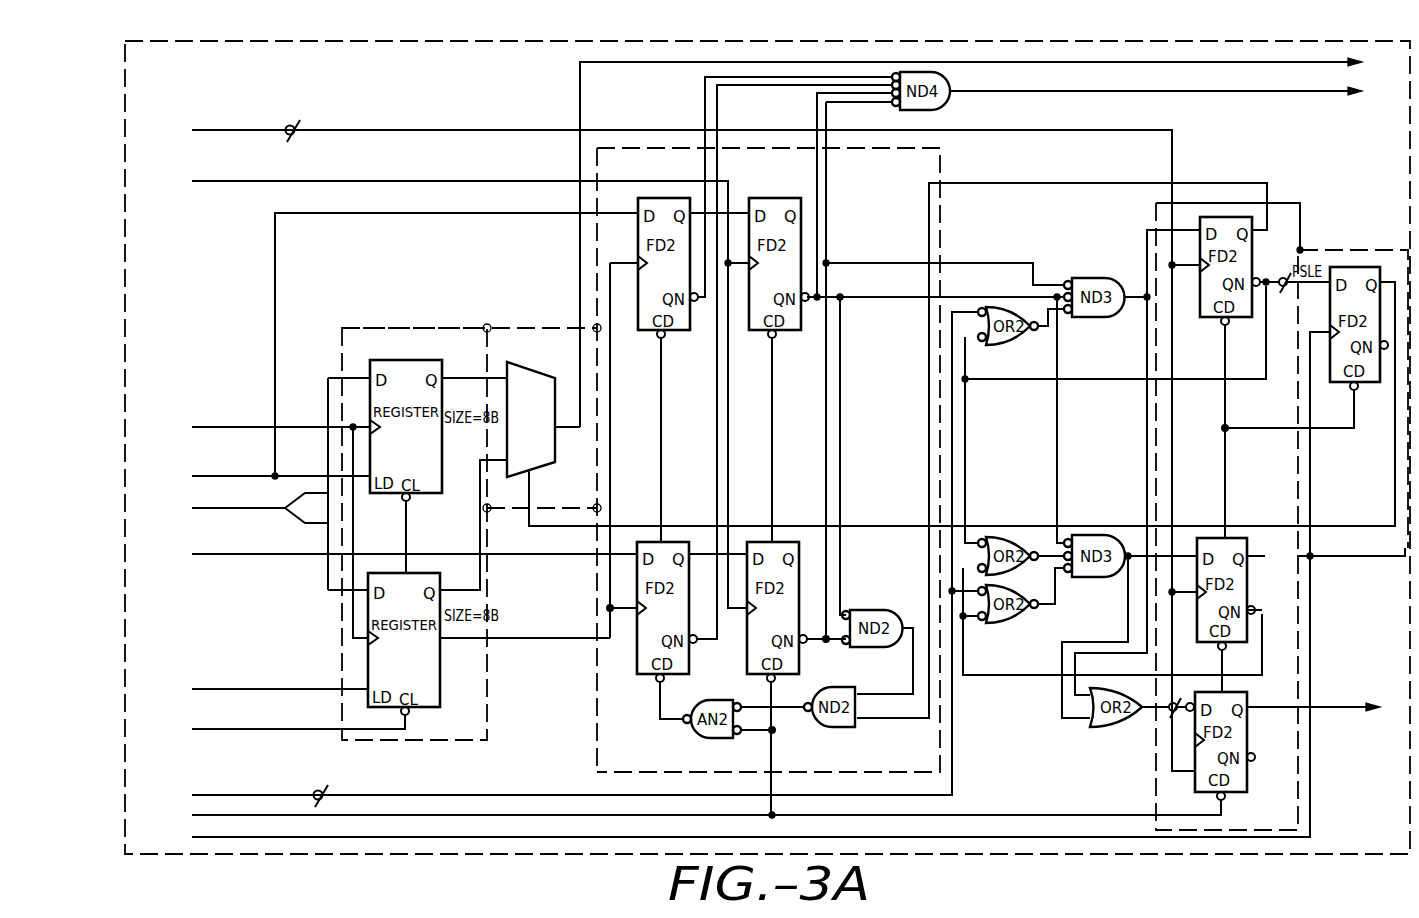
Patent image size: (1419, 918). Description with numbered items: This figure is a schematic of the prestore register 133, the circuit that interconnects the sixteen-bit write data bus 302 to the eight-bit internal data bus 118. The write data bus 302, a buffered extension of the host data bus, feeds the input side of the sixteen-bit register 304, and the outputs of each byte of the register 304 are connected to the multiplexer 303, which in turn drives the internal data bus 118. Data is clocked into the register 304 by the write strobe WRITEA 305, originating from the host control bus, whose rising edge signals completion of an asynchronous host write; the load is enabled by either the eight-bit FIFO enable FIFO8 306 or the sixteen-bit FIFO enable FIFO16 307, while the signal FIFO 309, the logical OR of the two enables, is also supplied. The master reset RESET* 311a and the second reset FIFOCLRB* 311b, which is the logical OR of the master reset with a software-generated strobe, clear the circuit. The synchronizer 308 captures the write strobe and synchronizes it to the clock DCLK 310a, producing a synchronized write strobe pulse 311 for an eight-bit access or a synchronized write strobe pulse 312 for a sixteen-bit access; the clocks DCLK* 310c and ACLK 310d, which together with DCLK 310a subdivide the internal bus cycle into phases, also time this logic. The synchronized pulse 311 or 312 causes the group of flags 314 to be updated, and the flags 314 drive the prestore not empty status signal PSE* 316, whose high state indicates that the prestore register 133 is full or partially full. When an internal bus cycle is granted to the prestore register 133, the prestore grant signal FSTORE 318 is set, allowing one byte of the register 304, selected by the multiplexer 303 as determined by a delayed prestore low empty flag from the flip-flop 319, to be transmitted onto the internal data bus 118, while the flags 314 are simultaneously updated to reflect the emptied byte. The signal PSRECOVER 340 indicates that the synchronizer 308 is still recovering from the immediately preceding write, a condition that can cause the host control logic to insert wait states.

The prestore register 133 is at (767, 446).
The DCLK* 310c is at (669, 440).
The DCLK 310a is at (443, 384).
The write strobe WRITEA 305 is at (259, 522).
The FIFO16 307 is at (393, 352).
The write data bus 302 is at (259, 484).
The FIFO8 306 is at (392, 551).
The FIFO 309 is at (258, 686).
The RESET* 311a is at (271, 726).
The prestore grant signal FSTORE 318 is at (563, 561).
The FIFOCLRB* 311b is at (678, 812).
The ACLK 310d is at (733, 592).
The internal data bus 118 is at (987, 235).
The PSRECOVER 340 is at (1172, 87).
The PSE* 316 is at (1330, 704).
The synchronized write strobe pulse 311 is at (943, 263).
The synchronized write strobe pulse 312 is at (935, 408).
The flip-flop 319 is at (1326, 551).
The synchronizer 308 is at (768, 460).
The register 304 is at (414, 535).
The multiplexer 303 is at (471, 460).
The flags 314 is at (1282, 517).